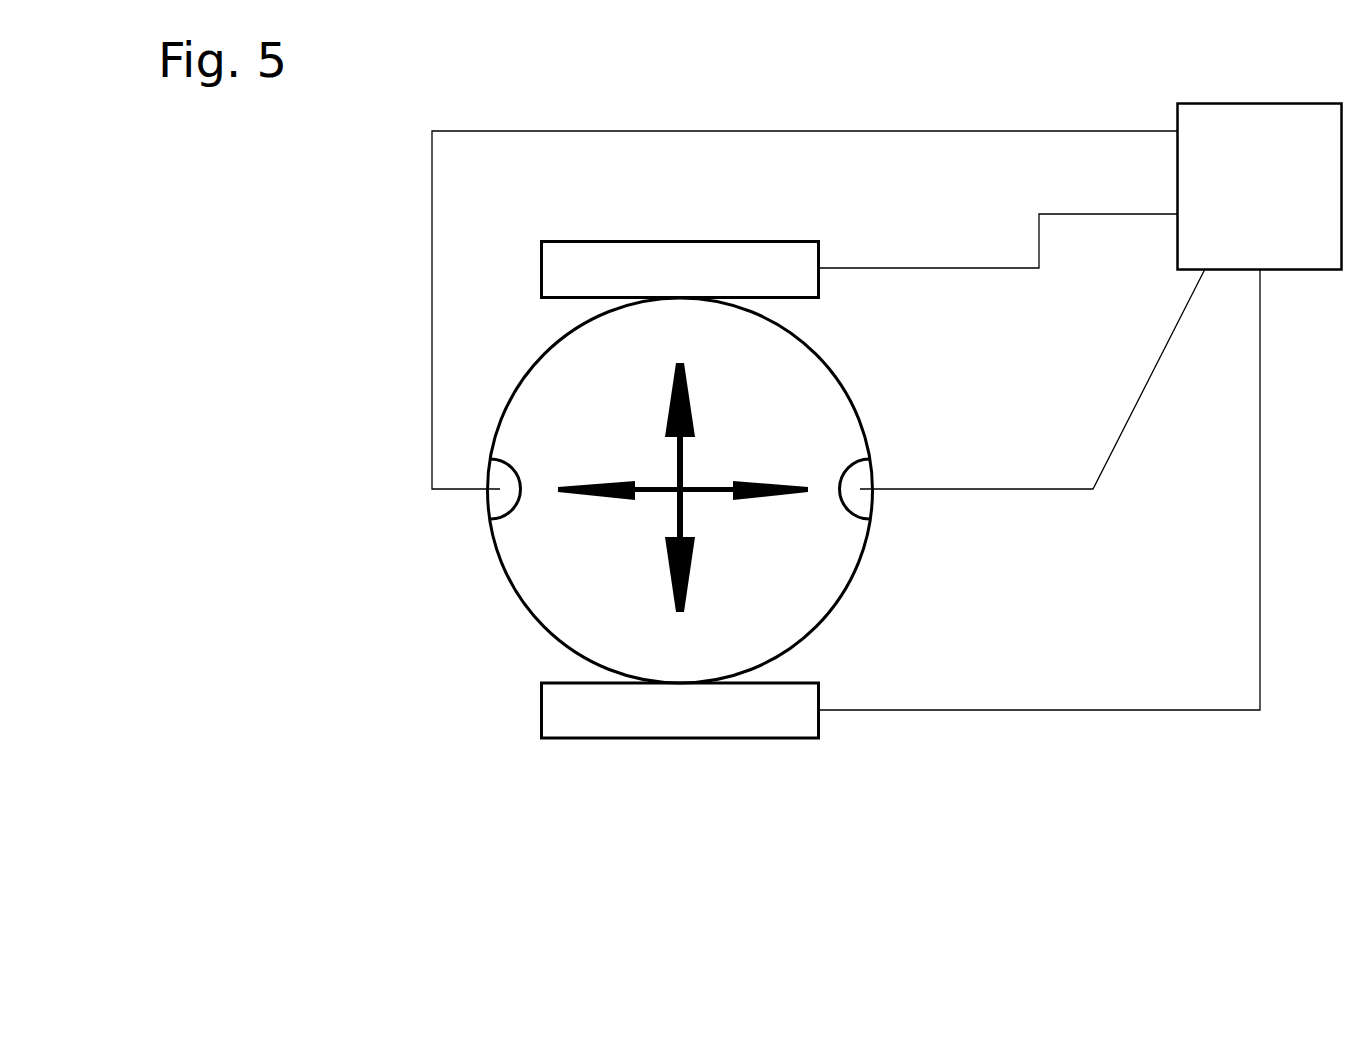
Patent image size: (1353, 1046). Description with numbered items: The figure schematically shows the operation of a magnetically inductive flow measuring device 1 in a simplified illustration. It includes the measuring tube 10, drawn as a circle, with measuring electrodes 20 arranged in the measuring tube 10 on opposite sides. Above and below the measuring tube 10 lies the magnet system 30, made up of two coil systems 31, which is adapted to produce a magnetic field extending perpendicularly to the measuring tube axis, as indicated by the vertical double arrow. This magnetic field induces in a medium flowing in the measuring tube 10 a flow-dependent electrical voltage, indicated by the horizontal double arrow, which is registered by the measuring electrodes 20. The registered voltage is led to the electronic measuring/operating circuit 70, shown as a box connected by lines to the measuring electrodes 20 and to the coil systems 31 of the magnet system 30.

The magnetically inductive flow measuring device 1 is at (403, 684).
The measuring tube 10 is at (819, 351).
The measuring electrodes 20 is at (502, 490).
The magnet system 30 is at (518, 605).
The coil systems 31 is at (597, 269).
The electronic measuring/operating circuit 70 is at (887, 407).